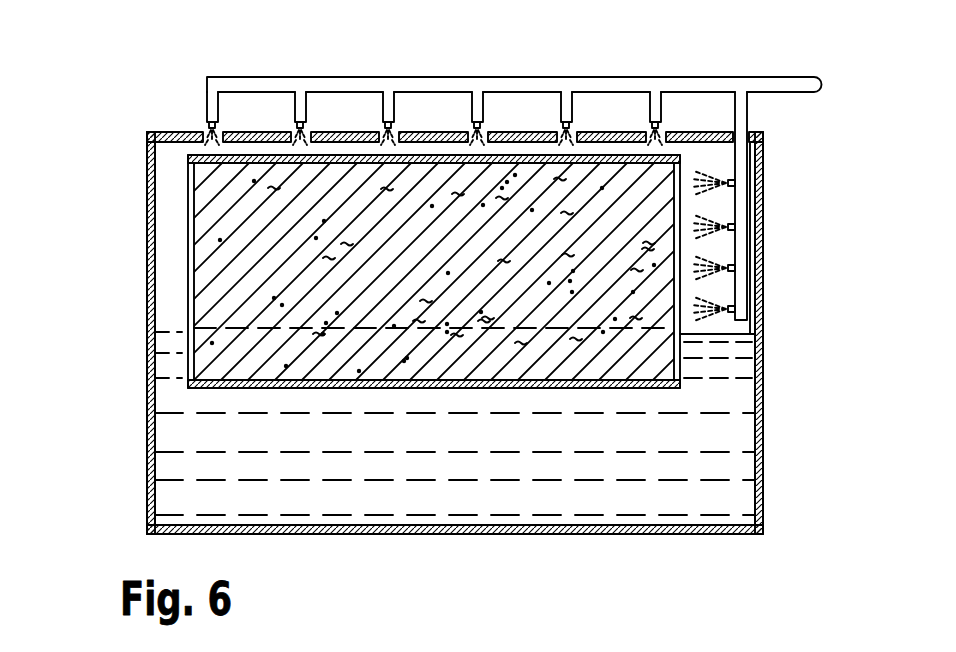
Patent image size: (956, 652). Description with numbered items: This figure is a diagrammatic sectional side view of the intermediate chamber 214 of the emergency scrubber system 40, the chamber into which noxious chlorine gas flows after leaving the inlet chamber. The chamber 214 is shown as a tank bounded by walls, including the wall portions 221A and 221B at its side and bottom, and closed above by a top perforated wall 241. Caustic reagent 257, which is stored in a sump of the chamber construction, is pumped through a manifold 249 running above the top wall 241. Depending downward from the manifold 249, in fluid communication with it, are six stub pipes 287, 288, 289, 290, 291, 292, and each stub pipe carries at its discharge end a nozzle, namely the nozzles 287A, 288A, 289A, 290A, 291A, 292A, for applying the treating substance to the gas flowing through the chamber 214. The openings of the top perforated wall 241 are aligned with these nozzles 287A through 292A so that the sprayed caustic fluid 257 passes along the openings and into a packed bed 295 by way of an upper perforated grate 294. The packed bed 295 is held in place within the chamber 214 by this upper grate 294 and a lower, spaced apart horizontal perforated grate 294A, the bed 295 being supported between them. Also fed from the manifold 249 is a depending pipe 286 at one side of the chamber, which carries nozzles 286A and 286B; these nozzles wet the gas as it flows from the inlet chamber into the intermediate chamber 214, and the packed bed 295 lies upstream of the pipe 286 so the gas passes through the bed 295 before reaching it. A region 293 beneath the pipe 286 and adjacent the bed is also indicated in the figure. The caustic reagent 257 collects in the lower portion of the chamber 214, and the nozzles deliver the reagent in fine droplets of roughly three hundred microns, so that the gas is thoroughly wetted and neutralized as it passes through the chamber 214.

The system 40 is at (155, 544).
The intermediate chamber 214 is at (163, 262).
The tank side wall 221A is at (760, 467).
The tank bottom wall 221B is at (678, 535).
The top perforated wall 241 is at (165, 132).
The manifold 249 is at (767, 82).
The caustic reagent 257 is at (165, 500).
The depending pipe 286 is at (747, 125).
The nozzle 286A is at (730, 200).
The nozzle 286B is at (730, 282).
The stub pipe 287 is at (650, 118).
The nozzle 287A is at (660, 126).
The stub pipe 288 is at (561, 118).
The nozzle 288A is at (570, 127).
The stub pipe 289 is at (472, 110).
The nozzle 289A is at (480, 127).
The stub pipe 290 is at (396, 105).
The nozzle 290A is at (384, 127).
The stub pipe 291 is at (293, 100).
The nozzle 291A is at (298, 123).
The stub pipe 292 is at (207, 92).
The nozzle 292A is at (207, 124).
The overflow chamber 293 is at (677, 372).
The upper perforated grate 294 is at (682, 157).
The lower perforated grate 294A is at (390, 388).
The packed bed 295 is at (663, 262).